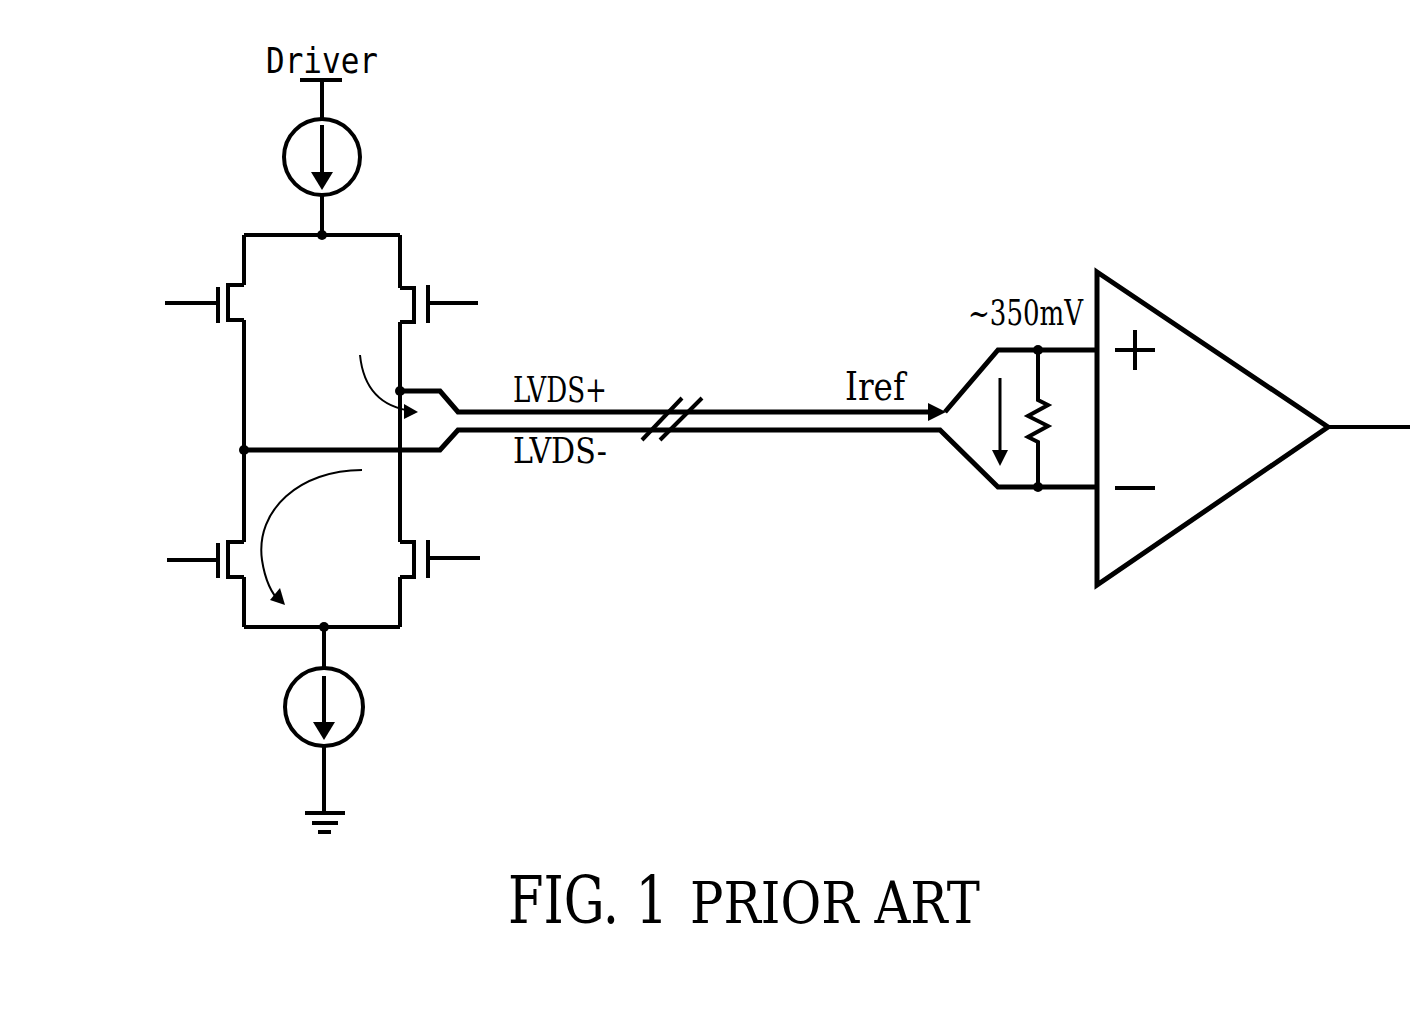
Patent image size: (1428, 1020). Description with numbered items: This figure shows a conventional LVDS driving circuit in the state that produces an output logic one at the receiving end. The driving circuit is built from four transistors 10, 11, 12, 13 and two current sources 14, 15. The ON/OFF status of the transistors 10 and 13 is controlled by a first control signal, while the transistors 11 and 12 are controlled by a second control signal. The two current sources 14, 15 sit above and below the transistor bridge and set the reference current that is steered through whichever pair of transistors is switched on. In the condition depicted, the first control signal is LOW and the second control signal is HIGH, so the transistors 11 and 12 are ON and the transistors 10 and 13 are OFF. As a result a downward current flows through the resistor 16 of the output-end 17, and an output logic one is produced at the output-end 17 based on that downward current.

The transistor 10 is at (220, 287).
The transistor 11 is at (430, 287).
The transistor 12 is at (218, 545).
The transistor 13 is at (430, 540).
The current source 14 is at (359, 163).
The current source 15 is at (362, 712).
The resistor 16 is at (1048, 440).
The output-end 17 is at (1150, 550).